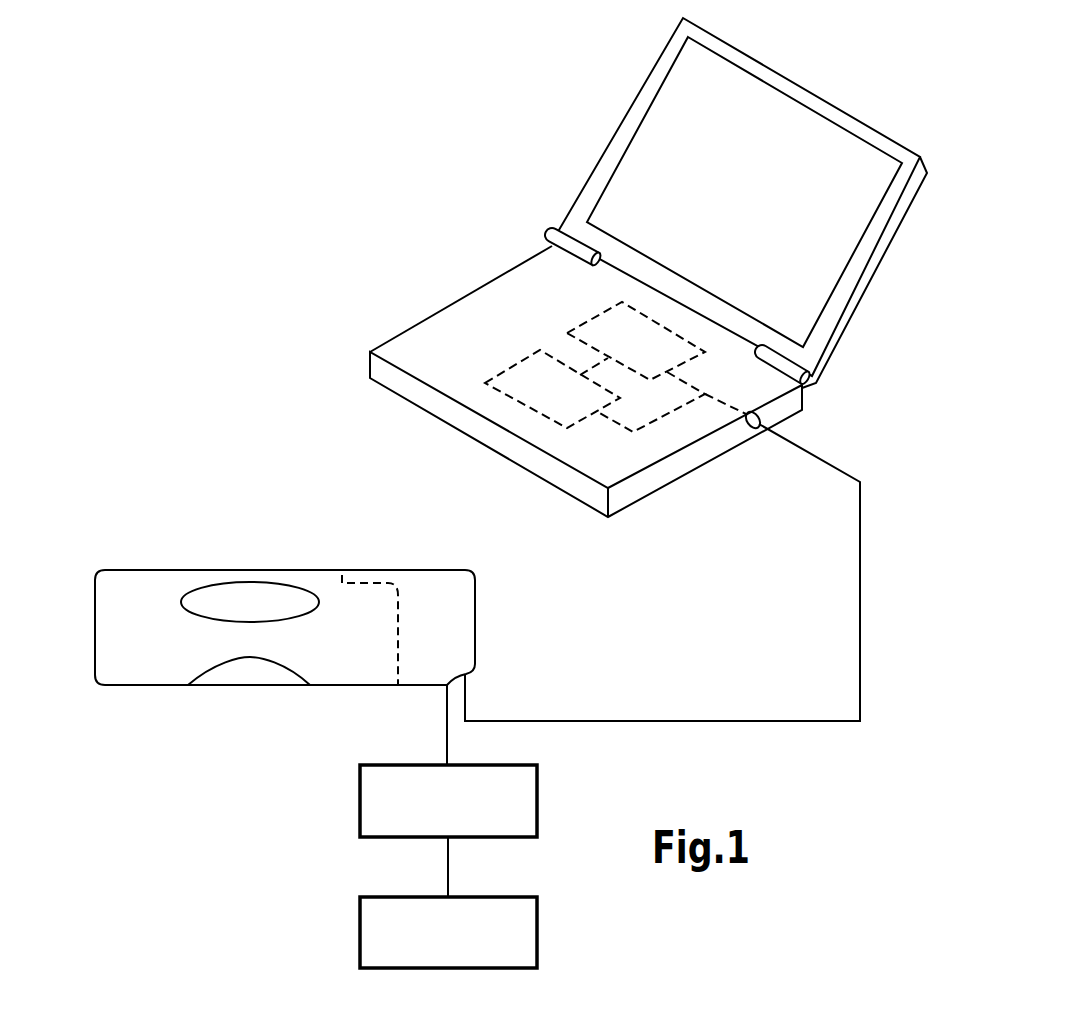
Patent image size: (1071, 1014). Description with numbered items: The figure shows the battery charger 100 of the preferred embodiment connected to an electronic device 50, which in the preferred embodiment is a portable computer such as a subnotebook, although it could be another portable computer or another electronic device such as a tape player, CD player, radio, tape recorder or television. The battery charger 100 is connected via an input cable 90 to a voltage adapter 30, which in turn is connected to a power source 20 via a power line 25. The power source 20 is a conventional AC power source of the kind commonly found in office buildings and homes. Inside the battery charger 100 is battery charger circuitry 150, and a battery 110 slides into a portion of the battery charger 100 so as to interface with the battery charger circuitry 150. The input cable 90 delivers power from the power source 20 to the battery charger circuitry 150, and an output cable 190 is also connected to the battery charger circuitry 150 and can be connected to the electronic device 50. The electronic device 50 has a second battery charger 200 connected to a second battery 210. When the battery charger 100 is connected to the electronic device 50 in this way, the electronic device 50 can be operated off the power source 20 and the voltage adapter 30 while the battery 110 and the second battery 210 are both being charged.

The power source 20 is at (537, 937).
The power line 25 is at (448, 870).
The voltage adapter 30 is at (537, 803).
The electronic device 50 is at (414, 326).
The input cable 90 is at (447, 730).
The battery charger 100 is at (96, 588).
The battery 110 is at (254, 676).
The battery charger circuitry 150 is at (437, 570).
The output cable 190 is at (598, 719).
The second battery charger 200 is at (505, 370).
The second battery 210 is at (580, 325).